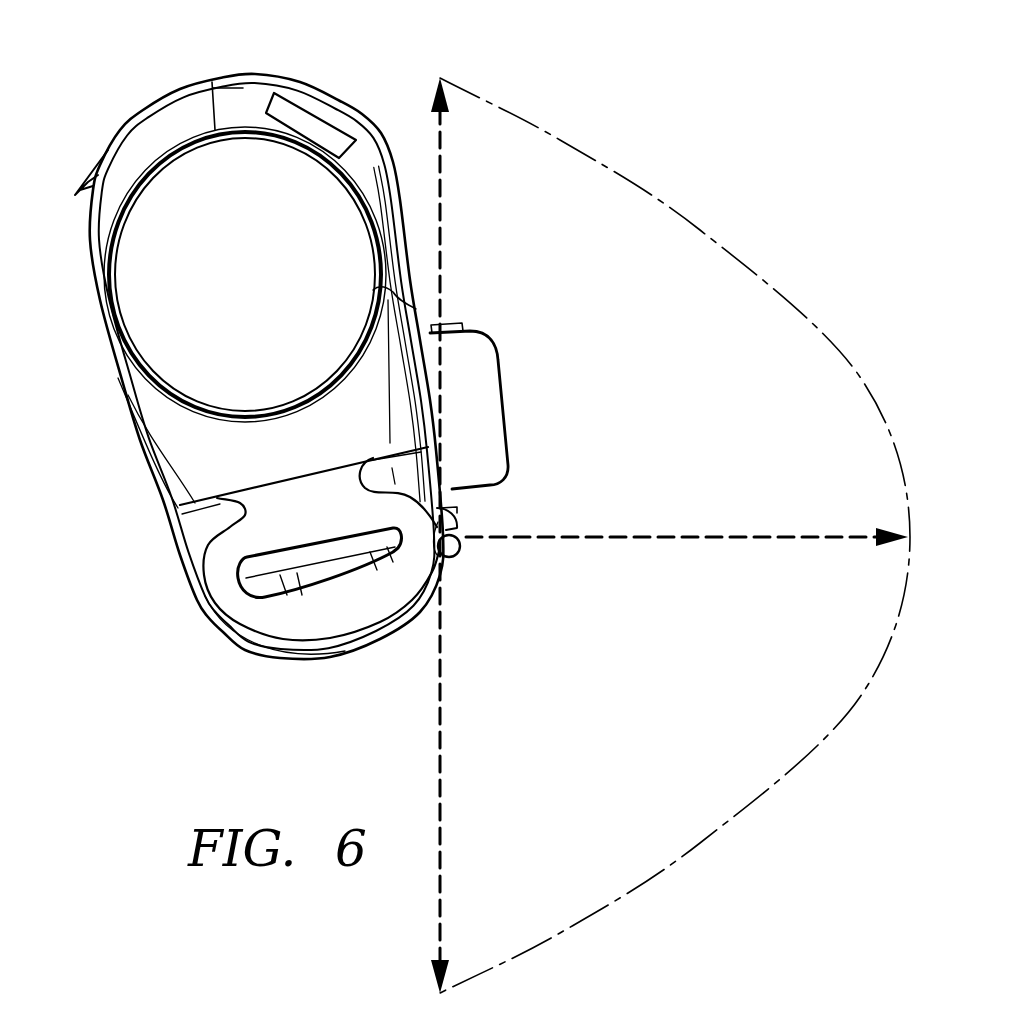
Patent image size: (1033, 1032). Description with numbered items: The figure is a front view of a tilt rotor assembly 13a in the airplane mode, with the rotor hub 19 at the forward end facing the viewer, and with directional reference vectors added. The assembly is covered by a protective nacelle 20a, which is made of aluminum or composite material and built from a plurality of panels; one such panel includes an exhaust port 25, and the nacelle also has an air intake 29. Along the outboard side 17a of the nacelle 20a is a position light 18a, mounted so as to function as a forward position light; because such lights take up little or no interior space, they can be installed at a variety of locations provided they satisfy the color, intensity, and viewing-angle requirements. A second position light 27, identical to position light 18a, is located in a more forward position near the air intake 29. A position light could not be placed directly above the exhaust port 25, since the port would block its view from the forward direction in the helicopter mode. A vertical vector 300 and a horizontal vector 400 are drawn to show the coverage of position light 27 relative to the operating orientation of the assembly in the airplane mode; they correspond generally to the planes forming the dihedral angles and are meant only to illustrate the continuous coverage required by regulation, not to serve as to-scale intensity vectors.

The tilt rotor assembly 13a is at (118, 485).
The outboard side 17a is at (382, 148).
The position light 18a is at (462, 556).
The rotor hub 19 is at (237, 131).
The protective nacelle 20a is at (127, 407).
The exhaust port 25 is at (506, 402).
The position light 27 is at (460, 524).
The air intake 29 is at (227, 630).
The vertical vector 300 is at (438, 748).
The horizontal vector 400 is at (752, 532).